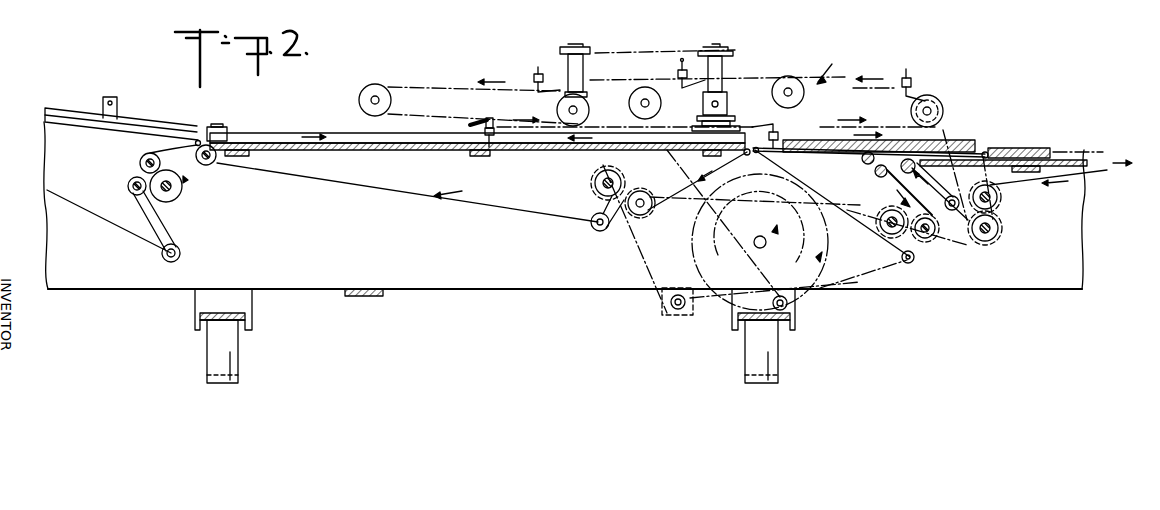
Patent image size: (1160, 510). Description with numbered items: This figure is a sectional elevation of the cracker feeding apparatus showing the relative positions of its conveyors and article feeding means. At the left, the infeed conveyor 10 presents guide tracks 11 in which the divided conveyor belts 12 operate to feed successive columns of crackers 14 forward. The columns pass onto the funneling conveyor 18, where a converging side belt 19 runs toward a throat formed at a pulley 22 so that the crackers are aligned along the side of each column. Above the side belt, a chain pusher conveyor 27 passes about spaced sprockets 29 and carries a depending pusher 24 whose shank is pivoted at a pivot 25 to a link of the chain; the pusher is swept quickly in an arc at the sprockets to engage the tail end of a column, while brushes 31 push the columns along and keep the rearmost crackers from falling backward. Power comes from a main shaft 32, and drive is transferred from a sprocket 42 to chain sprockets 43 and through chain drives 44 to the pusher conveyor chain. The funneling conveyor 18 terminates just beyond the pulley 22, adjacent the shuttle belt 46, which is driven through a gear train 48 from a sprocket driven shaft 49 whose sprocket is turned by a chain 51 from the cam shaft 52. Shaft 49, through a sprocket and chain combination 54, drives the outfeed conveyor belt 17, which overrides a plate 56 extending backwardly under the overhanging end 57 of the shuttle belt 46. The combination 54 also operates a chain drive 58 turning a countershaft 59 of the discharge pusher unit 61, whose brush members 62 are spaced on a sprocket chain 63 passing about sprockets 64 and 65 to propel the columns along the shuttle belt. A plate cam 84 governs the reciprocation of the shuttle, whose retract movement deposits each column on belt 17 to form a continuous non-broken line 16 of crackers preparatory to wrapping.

The infeed conveyor 10 is at (143, 120).
The guide tracks 11 is at (68, 120).
The divided conveyor belts 12 is at (130, 194).
The crackers 14 is at (888, 140).
The continuous non-broken line 16 is at (1064, 150).
The outfeed conveyor belt 17 is at (1033, 178).
The funneling conveyor 18 is at (286, 136).
The side belt 19 is at (253, 135).
The pulley 22 is at (698, 128).
The depending pusher 24 is at (482, 117).
The pivot 25 is at (495, 127).
The chain pusher conveyor 27 is at (422, 86).
The sprockets 29 is at (373, 94).
The brushes 31 is at (541, 70).
The main shaft 32 is at (743, 4).
The sprocket 42 is at (775, 82).
The chain sprockets 43 is at (730, 48).
The chain drives 44 is at (612, 51).
The shuttle belt 46 is at (772, 167).
The gear train 48 is at (878, 212).
The sprocket driven shaft 49 is at (924, 238).
The chain 51 is at (870, 284).
The cam shaft 52 is at (755, 242).
The sprocket and chain combination 54 is at (965, 245).
The plate 56 is at (1086, 158).
The overhanging end 57 is at (987, 150).
The chain drive 58 is at (955, 124).
The countershaft 59 is at (934, 106).
The discharge pusher unit 61 is at (831, 63).
The brush members 62 is at (676, 70).
The sprocket chain 63 is at (866, 88).
The sprocket 64 is at (794, 84).
The sprocket 65 is at (632, 120).
The plate cam 84 is at (720, 290).